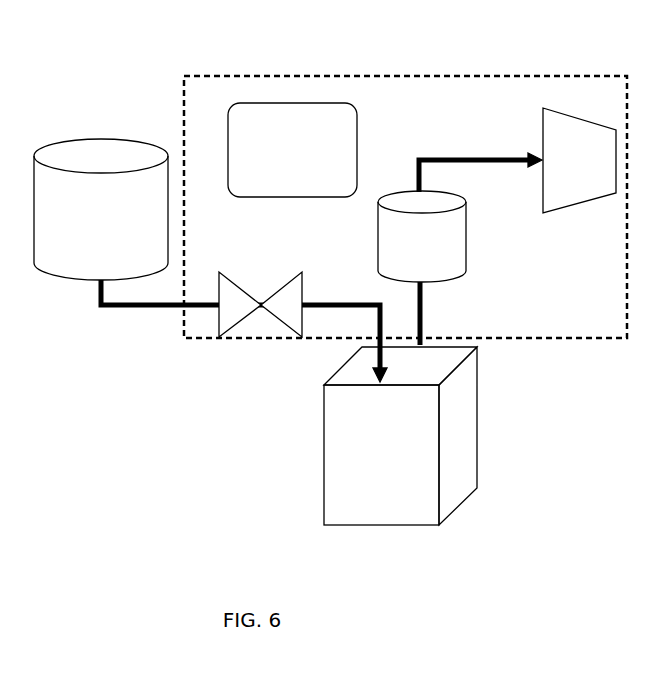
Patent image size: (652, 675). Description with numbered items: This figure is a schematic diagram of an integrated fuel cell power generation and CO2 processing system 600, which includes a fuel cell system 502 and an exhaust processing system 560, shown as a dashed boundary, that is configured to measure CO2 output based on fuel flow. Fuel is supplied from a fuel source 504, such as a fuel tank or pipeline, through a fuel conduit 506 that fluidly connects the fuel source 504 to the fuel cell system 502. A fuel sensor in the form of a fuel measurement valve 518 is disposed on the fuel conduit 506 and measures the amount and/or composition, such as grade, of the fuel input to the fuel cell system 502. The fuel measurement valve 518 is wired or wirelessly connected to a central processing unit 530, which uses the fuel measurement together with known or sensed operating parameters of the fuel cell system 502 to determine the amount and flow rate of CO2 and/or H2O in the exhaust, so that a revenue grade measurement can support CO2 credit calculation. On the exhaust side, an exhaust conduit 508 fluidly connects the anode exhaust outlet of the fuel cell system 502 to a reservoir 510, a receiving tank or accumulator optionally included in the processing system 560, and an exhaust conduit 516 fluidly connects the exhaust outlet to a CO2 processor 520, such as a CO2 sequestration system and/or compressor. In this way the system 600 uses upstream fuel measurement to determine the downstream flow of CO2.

The integrated fuel cell power generation and CO2 processing system 600 is at (377, 45).
The exhaust processing system 560 is at (523, 340).
The fuel source 504 is at (121, 203).
The fuel conduit 506 is at (152, 307).
The fuel measurement valve 518 is at (259, 302).
The central processing unit 530 is at (286, 285).
The reservoir 510 is at (404, 253).
The exhaust conduit 516 is at (500, 165).
The CO2 processor 520 is at (569, 173).
The exhaust conduit 508 is at (422, 303).
The fuel cell system 502 is at (362, 467).